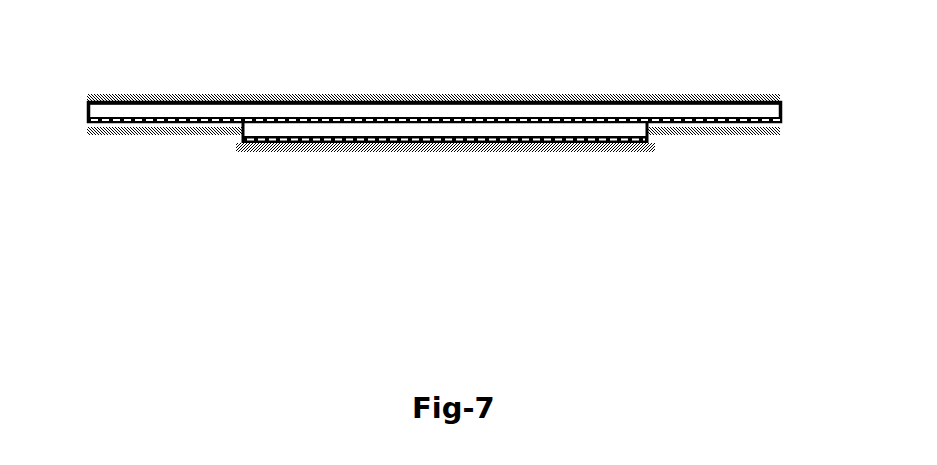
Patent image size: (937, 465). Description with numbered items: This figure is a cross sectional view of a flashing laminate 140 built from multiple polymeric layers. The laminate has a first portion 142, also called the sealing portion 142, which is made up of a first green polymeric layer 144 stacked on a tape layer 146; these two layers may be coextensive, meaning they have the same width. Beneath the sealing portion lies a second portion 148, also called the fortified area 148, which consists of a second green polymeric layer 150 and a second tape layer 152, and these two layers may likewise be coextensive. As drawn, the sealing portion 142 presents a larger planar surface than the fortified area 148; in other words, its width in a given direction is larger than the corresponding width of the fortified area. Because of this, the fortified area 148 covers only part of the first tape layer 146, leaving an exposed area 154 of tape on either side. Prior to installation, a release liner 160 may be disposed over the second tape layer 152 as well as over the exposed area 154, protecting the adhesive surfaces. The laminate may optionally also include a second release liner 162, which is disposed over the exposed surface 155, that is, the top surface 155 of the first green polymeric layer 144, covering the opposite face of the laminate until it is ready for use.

The flashing laminate 140 is at (677, 85).
The first portion 142 is at (86, 115).
The first green polymeric layer 144 is at (783, 106).
The tape layer 146 is at (783, 125).
The second portion 148 is at (241, 143).
The second green polymeric layer 150 is at (662, 140).
The second tape layer 152 is at (655, 151).
The exposed area 154 is at (760, 131).
The exposed surface 155 is at (143, 102).
The release liner 160 is at (133, 135).
The second release liner 162 is at (182, 95).